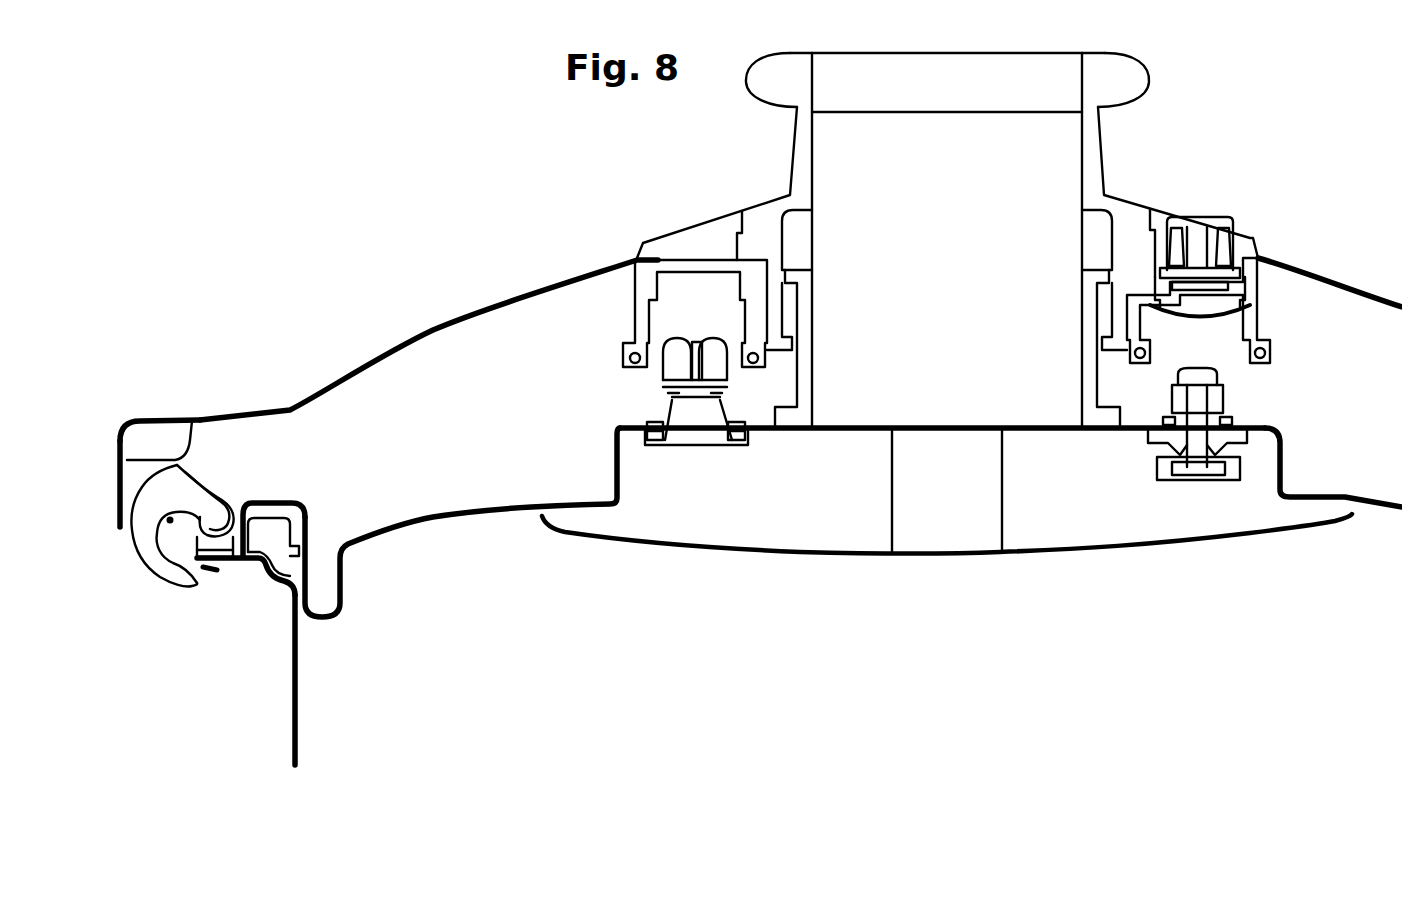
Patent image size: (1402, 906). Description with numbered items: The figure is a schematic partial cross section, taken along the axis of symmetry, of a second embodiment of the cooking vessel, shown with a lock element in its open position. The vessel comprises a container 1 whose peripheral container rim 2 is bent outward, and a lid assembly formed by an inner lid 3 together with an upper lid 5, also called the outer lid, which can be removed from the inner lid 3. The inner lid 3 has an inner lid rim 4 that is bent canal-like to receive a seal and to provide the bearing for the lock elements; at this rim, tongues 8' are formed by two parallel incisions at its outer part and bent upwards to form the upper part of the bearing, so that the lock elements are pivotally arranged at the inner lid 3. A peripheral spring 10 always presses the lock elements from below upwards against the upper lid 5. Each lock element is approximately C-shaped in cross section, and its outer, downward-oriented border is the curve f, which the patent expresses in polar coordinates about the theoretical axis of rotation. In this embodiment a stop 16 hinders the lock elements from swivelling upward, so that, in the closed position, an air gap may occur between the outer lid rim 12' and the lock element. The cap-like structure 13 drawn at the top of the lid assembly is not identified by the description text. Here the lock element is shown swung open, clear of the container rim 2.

The container 1 is at (291, 745).
The peripheral container rim 2 is at (229, 568).
The inner lid 3 is at (452, 518).
The inner lid rim 4 is at (261, 503).
The upper lid 5 is at (443, 323).
The tongue 8' is at (205, 455).
The peripheral spring 10 is at (168, 522).
The outer lid rim 12' is at (92, 484).
The cap 13 is at (776, 148).
The stop 16 is at (150, 440).
The curve f is at (146, 575).